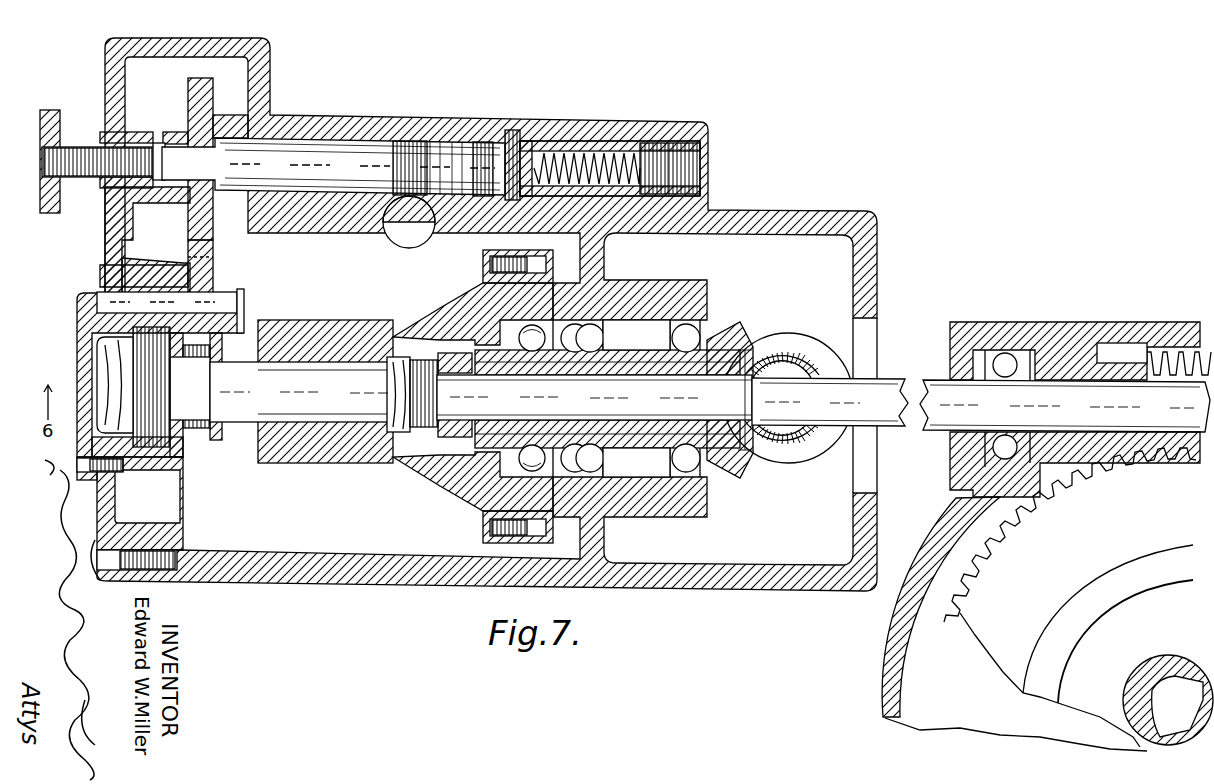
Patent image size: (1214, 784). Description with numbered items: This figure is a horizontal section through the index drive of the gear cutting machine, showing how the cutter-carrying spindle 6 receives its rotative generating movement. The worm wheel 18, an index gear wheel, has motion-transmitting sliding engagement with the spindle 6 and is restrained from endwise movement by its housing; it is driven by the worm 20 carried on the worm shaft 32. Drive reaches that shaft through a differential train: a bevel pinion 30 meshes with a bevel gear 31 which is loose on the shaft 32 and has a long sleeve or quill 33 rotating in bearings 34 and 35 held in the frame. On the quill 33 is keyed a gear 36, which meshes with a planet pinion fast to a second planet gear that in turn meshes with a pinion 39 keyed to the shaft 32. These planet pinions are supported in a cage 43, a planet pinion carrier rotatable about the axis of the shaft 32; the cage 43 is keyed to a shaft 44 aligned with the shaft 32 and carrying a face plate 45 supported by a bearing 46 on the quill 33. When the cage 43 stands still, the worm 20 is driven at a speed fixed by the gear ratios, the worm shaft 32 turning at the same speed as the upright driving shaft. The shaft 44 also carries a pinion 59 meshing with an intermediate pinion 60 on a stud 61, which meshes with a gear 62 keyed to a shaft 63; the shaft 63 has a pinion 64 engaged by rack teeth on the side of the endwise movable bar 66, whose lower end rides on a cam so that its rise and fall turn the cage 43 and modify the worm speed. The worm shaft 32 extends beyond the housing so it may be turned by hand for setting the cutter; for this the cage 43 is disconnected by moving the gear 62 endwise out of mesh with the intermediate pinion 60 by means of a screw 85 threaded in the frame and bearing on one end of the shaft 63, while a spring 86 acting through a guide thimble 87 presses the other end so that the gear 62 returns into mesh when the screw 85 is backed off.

The cutter-carrying spindle 6 is at (1170, 700).
The worm wheel 18 is at (977, 613).
The worm 20 is at (1147, 350).
The bevel pinion 30 is at (793, 353).
The bevel gear 31 is at (742, 337).
The worm shaft 32 is at (880, 393).
The quill 33 is at (636, 462).
The bearing 34 is at (605, 336).
The bearing 35 is at (708, 333).
The gear 36 is at (498, 345).
The pinion 39 is at (452, 362).
The cage 43 is at (307, 337).
The shaft 44 is at (231, 410).
The face plate 45 is at (538, 300).
The bearing 46 is at (510, 452).
The pinion 59 is at (193, 430).
The intermediate pinion 60 is at (213, 270).
The stud 61 is at (228, 303).
The gear 62 is at (200, 100).
The shaft 63 is at (303, 160).
The pinion 64 is at (412, 153).
The endwise movable bar 66 is at (401, 235).
The screw 85 is at (60, 152).
The spring 86 is at (620, 148).
The guide thimble 87 is at (565, 143).